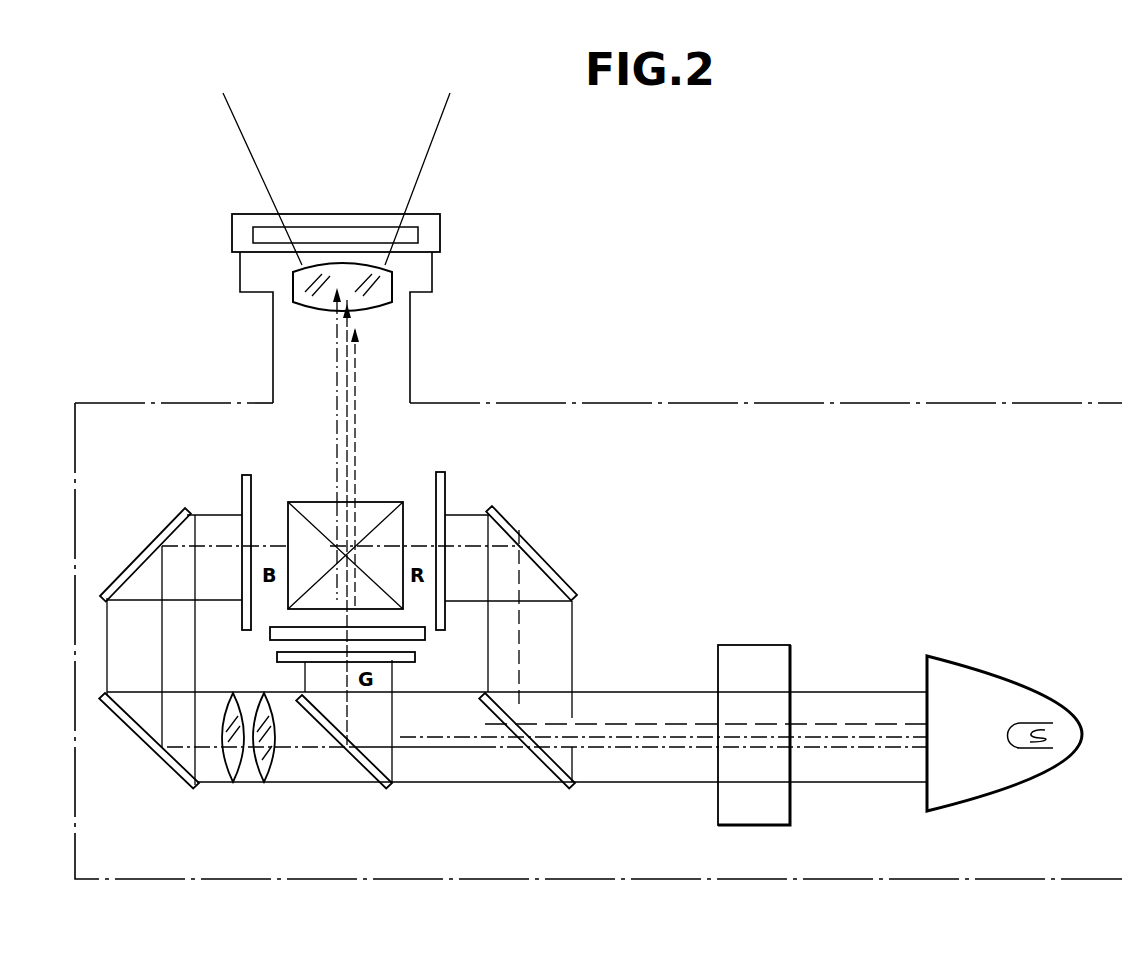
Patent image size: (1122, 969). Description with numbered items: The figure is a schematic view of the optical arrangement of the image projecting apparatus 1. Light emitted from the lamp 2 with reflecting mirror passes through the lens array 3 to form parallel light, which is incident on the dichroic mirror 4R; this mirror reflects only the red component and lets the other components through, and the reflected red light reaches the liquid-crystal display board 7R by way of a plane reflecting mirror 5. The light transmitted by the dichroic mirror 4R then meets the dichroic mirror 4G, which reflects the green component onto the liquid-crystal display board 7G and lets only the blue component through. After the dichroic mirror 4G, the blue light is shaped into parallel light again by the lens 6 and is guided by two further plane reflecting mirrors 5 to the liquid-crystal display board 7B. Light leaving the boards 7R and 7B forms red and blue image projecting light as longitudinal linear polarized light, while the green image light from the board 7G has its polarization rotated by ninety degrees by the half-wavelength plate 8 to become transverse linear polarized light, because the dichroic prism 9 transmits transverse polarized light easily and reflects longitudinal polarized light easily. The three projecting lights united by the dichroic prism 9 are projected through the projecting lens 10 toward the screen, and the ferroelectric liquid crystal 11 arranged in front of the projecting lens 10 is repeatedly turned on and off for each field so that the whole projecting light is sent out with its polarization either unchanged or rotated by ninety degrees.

The image projecting apparatus 1 is at (873, 401).
The lamp with reflecting mirror 2 is at (1003, 665).
The lens array 3 is at (760, 652).
The dichroic mirror 4G is at (365, 770).
The dichroic mirror 4R is at (537, 760).
The plane reflecting mirror 5 is at (135, 558).
The lens 6 is at (262, 783).
The liquid-crystal display board 7B is at (245, 630).
The liquid-crystal display board 7G is at (417, 656).
The liquid-crystal display board 7R is at (447, 488).
The half-wavelength plate 8 is at (427, 635).
The dichroic prism 9 is at (377, 500).
The projecting lens 10 is at (392, 283).
The ferroelectric liquid crystal (FLC) 11 is at (410, 227).